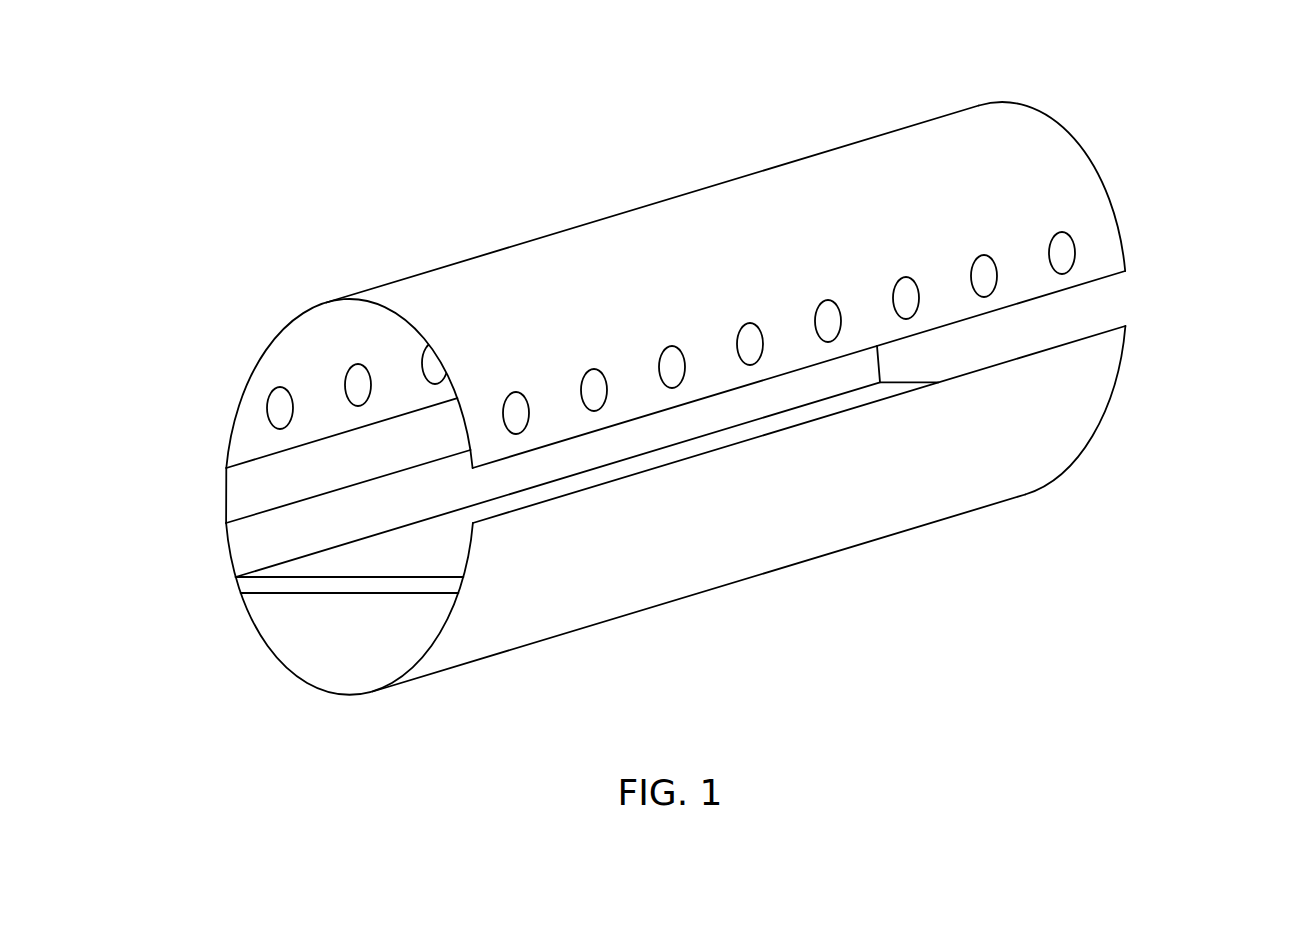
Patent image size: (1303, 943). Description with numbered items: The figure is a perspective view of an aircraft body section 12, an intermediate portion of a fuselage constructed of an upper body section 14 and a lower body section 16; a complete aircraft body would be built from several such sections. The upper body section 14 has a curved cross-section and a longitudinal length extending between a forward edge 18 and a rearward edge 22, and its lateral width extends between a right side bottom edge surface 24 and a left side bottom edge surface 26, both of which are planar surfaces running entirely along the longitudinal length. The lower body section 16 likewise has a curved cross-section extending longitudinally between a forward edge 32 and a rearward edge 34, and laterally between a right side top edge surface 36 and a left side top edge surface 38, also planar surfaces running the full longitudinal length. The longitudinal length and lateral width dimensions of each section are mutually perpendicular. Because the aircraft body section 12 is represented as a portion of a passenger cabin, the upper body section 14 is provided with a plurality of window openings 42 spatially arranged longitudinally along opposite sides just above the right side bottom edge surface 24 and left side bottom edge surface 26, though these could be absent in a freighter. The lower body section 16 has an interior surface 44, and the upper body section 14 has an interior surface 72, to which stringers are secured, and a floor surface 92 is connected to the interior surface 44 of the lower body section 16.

The aircraft body section 12 is at (1165, 153).
The upper body section 14 is at (620, 212).
The lower body section 16 is at (828, 558).
The forward edge 18 is at (997, 105).
The rearward edge 22 is at (353, 300).
The right side bottom edge surface 24 is at (1115, 278).
The left side bottom edge surface 26 is at (296, 449).
The forward edge 32 is at (1023, 500).
The rearward edge 34 is at (345, 693).
The right side top edge surface 36 is at (1067, 345).
The left side top edge surface 38 is at (240, 522).
The window openings 42 is at (277, 390).
The interior surface 44 is at (250, 545).
The interior surface 72 is at (248, 427).
The floor surface 92 is at (423, 547).